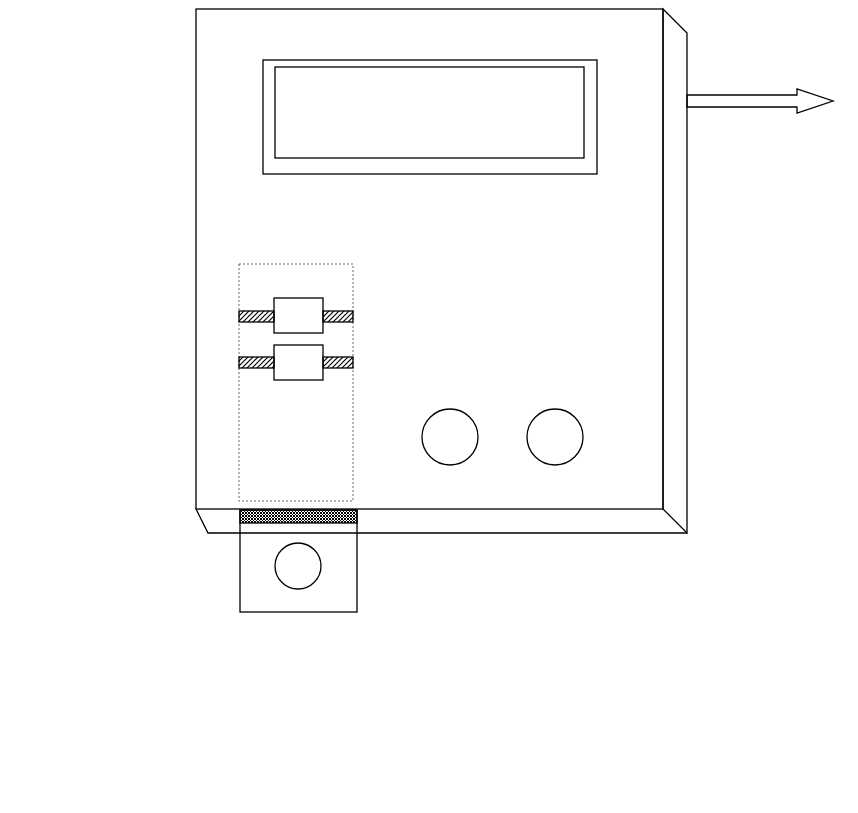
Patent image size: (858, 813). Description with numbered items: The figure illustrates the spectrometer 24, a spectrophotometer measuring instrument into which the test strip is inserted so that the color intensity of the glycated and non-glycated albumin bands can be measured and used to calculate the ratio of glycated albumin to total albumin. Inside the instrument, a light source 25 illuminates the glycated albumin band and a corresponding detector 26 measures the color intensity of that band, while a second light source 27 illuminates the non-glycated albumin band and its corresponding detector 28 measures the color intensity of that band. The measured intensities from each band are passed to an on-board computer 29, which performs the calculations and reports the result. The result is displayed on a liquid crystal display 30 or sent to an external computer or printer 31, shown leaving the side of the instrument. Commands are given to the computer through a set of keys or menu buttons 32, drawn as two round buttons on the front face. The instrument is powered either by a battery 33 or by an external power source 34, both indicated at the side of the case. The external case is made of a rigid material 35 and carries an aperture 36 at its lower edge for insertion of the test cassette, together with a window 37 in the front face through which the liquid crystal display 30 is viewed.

The spectrometer 24 is at (255, 788).
The light source 25 is at (300, 362).
The detector 26 is at (308, 350).
The light source 27 is at (287, 306).
The detector 28 is at (308, 317).
The on-board computer 29 is at (310, 205).
The liquid crystal display 30 is at (429, 112).
The external computer or printer 31 is at (772, 146).
The menu buttons 32 is at (463, 450).
The battery 33 is at (683, 453).
The external power source 34 is at (683, 499).
The rigid material 35 is at (205, 55).
The aperture 36 is at (232, 522).
The window 37 is at (254, 122).